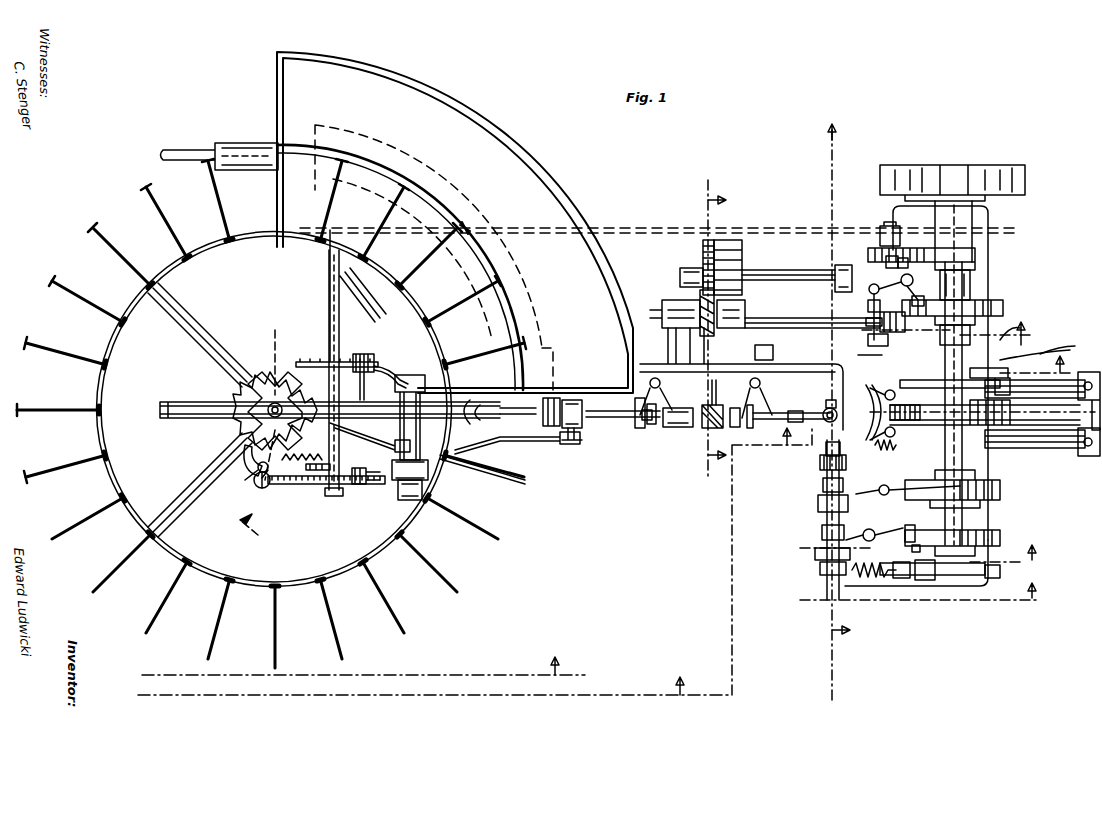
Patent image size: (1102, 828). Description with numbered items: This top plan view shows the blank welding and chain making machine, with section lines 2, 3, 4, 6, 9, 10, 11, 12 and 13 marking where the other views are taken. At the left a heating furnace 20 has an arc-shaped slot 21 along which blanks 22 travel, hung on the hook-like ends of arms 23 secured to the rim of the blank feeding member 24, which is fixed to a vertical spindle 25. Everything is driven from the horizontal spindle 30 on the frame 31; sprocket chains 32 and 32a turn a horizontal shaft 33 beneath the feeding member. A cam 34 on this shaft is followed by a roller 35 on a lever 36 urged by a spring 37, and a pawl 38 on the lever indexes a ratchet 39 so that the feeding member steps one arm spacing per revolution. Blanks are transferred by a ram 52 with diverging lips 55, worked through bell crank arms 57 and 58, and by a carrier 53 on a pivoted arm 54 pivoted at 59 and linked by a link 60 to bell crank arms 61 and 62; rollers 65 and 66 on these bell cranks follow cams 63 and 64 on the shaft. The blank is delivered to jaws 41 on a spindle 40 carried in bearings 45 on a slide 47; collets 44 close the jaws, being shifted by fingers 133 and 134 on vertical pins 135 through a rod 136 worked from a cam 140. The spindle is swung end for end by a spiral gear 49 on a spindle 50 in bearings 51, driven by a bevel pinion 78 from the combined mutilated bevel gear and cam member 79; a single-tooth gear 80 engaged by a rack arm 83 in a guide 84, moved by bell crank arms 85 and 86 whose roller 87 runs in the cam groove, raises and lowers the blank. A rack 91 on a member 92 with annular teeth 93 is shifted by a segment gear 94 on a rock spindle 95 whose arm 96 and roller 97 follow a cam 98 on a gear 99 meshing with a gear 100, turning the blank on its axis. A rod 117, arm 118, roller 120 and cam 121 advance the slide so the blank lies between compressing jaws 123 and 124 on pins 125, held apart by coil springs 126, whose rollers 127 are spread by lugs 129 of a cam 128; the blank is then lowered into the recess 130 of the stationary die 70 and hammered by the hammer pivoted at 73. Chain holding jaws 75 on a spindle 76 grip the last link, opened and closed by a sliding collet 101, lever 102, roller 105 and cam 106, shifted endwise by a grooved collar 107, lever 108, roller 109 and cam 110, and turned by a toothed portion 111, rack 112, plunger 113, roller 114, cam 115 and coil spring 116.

The section line 2 is at (427, 690).
The section line 3 is at (926, 374).
The section line 4 is at (837, 413).
The section line 6 is at (367, 671).
The section line 9 is at (276, 350).
The section line 10 is at (711, 318).
The section line 11 is at (919, 595).
The section line 12 is at (944, 333).
The section line 13 is at (920, 555).
The heating furnace 20 is at (398, 88).
The arc-shaped slot 21 is at (372, 152).
The blanks 22 is at (464, 224).
The arms 23 is at (110, 250).
The blank feeding member 24 is at (395, 560).
The vertical spindle 25 is at (270, 392).
The horizontal spindle 30 is at (972, 286).
The frame 31 is at (990, 230).
The sprocket chain 32 is at (990, 198).
The sprocket chain 32a is at (656, 214).
The horizontal shaft 33 is at (328, 290).
The cam 34 is at (322, 486).
The roller 35 is at (266, 488).
The lever 36 is at (255, 472).
The spring 37 is at (250, 470).
The pawl 38 is at (244, 450).
The ratchet 39 is at (238, 423).
The spindle 40 is at (652, 424).
The jaws 41 is at (604, 420).
The collets 44 is at (672, 428).
The bearings 45 is at (706, 428).
The slide 47 is at (645, 358).
The gear 49 is at (716, 310).
The spindle 50 is at (786, 318).
The bearings 51 is at (670, 304).
The ram 52 is at (488, 443).
The carrier 53 is at (548, 396).
The pivoted arm 54 is at (576, 400).
The diverging lips 55 is at (482, 415).
The arm 57 is at (392, 438).
The arm 58 is at (390, 362).
The pivot 59 is at (572, 441).
The link 60 is at (470, 455).
The arm 61 is at (430, 478).
The arm 62 is at (404, 374).
The cam 63 is at (312, 360).
The cam 64 is at (410, 490).
The roller 65 is at (362, 353).
The roller 66 is at (358, 486).
The stationary die 70 is at (866, 440).
The hammer pivot 73 is at (1082, 456).
The chain holding jaws 75 is at (824, 458).
The spindle 76 is at (822, 486).
The bevel pinion 78 is at (904, 324).
The combined mutilated bevel gear and cam member 79 is at (988, 318).
The gear 80 is at (864, 318).
The rack arm 83 is at (868, 304).
The guide 84 is at (858, 347).
The arm 85 is at (885, 311).
The arm 86 is at (914, 284).
The roller 87 is at (980, 302).
The rack 91 is at (716, 386).
The member 92 is at (680, 276).
The annular teeth 93 is at (702, 248).
The segment gear 94 is at (744, 260).
The rock spindle 95 is at (782, 268).
The arm 96 is at (836, 270).
The roller 97 is at (884, 265).
The cam 98 is at (902, 266).
The gear 99 is at (884, 228).
The gear 100 is at (978, 256).
The sliding collet 101 is at (818, 466).
The pivoted lever 102 is at (908, 482).
The roller 105 is at (854, 540).
The cam 106 is at (1002, 490).
The grooved collar 107 is at (816, 516).
The lever 108 is at (912, 528).
The roller 109 is at (924, 537).
The cam 110 is at (1000, 540).
The toothed portion 111 is at (818, 572).
The rack 112 is at (814, 556).
The plunger 113 is at (902, 580).
The roller 114 is at (928, 582).
The cam 115 is at (990, 574).
The coil spring 116 is at (872, 580).
The rod 117 is at (775, 350).
The arm 118 is at (1048, 347).
The roller 120 is at (1040, 354).
The cam 121 is at (1022, 330).
The compressing jaw 123 is at (916, 382).
The compressing jaw 124 is at (880, 440).
The pins 125 is at (896, 436).
The coil springs 126 is at (828, 400).
The rollers 127 is at (920, 422).
The cam 128 is at (1040, 400).
The lugs 129 is at (1010, 448).
The recess 130 is at (822, 412).
The finger 133 is at (768, 420).
The finger 134 is at (650, 426).
The vertical pins 135 is at (636, 424).
The rod 136 is at (878, 346).
The cam 140 is at (986, 379).